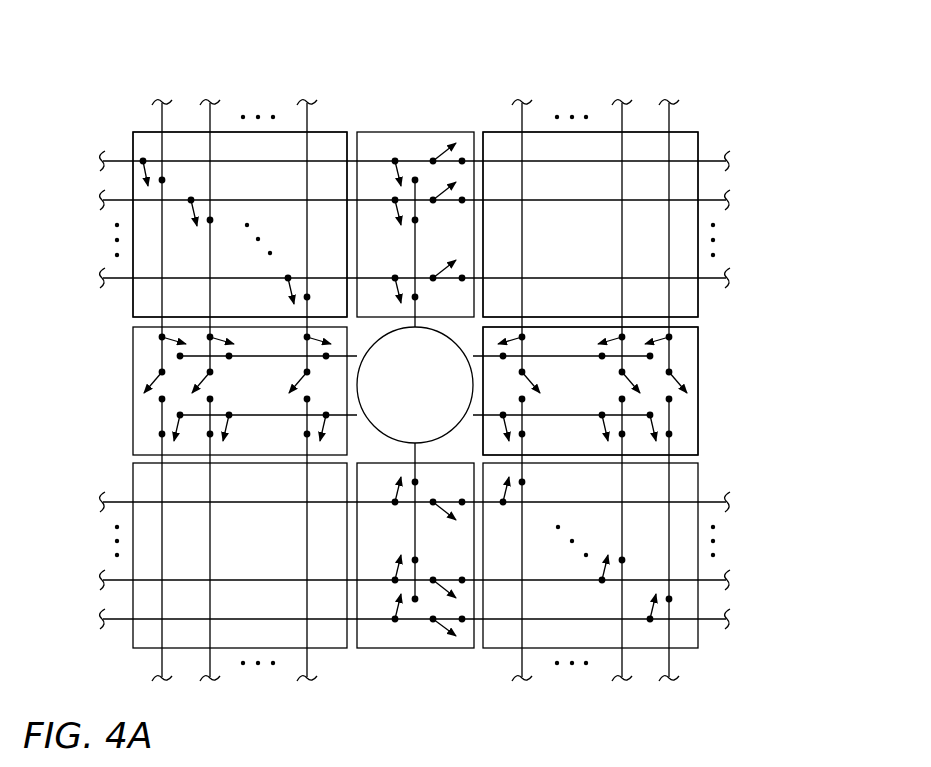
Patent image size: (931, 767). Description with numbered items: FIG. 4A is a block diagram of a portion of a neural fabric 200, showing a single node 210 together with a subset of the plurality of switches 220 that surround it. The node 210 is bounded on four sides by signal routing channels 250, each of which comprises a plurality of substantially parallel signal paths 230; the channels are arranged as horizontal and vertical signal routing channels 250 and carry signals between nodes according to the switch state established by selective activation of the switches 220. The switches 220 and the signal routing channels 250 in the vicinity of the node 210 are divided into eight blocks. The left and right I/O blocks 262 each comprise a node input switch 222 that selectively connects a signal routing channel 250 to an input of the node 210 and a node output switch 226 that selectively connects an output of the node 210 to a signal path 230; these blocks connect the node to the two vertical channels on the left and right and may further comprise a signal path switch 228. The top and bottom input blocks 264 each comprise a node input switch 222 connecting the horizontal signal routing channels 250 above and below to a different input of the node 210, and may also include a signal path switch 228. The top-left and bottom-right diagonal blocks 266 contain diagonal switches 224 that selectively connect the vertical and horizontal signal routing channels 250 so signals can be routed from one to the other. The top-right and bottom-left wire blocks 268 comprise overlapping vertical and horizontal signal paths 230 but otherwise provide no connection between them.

The neural fabric 200 is at (690, 50).
The node 210 is at (436, 400).
The switches 220 is at (130, 76).
The node input switch 222 is at (395, 133).
The diagonal switch 224 is at (652, 644).
The node output switch 226 is at (133, 415).
The signal path switch 228 is at (477, 98).
The signal path 230 is at (708, 282).
The signal routing channel 250 is at (328, 98).
The input/output (I/O) block 262 is at (133, 390).
The input block 264 is at (417, 132).
The diagonal block 266 is at (133, 132).
The wire block 268 is at (699, 132).